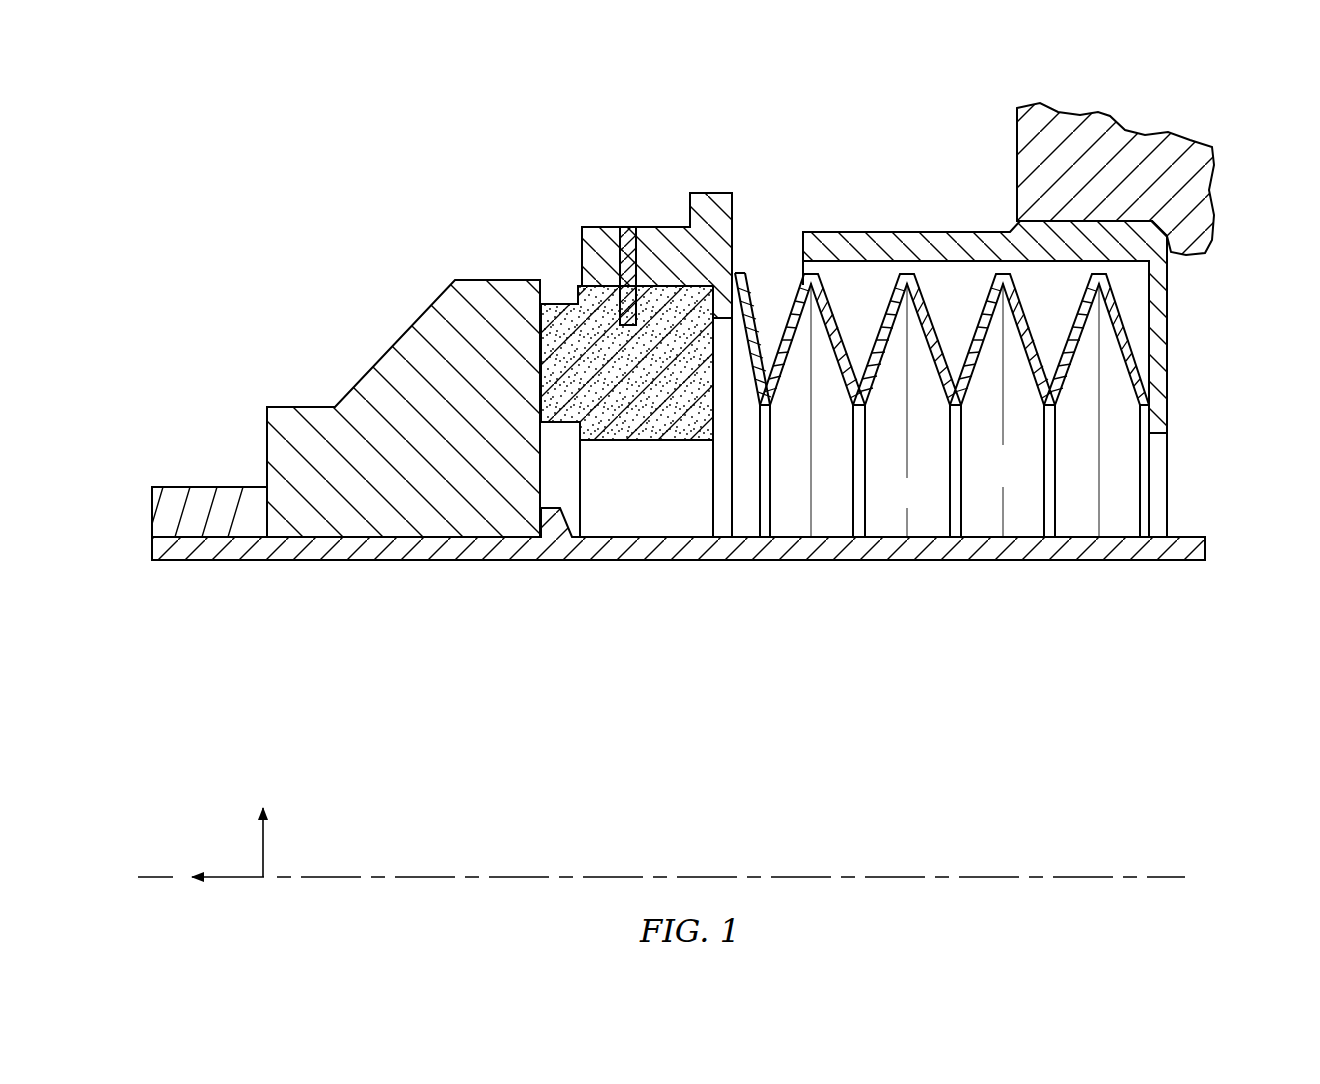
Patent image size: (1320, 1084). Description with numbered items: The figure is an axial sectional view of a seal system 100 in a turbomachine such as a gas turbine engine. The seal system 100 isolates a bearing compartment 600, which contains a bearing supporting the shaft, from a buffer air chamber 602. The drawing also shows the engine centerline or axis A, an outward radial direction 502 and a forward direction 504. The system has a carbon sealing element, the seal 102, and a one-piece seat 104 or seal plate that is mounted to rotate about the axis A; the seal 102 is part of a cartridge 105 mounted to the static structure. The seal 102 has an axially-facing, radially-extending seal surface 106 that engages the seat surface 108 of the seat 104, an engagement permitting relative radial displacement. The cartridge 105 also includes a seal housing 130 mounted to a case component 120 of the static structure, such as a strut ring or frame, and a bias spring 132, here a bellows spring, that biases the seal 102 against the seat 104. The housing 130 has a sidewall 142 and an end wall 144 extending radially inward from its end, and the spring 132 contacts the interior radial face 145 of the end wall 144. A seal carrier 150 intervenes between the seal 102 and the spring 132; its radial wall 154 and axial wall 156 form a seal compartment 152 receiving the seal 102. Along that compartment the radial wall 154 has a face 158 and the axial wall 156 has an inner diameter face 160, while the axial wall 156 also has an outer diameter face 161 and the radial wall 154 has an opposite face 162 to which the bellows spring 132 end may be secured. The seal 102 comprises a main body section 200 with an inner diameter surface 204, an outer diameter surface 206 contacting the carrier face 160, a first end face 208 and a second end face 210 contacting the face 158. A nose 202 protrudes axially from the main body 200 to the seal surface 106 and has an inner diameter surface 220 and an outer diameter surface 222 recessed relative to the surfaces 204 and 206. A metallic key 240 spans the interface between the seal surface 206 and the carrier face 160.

The seal system 100 is at (543, 152).
The sealing element (seal) 102 is at (618, 453).
The seat (seal plate) 104 is at (343, 360).
The cartridge subassembly (cartridge) 105 is at (737, 140).
The seal surface (face) 106 is at (540, 358).
The seat surface (face) 108 is at (577, 445).
The case component 120 is at (1127, 161).
The seal housing (seal support) 130 is at (833, 220).
The bias spring 132 is at (875, 418).
The sidewall 142 is at (922, 248).
The end wall 144 is at (1168, 362).
The interior radial face 145 is at (1137, 312).
The seal carrier (carbon carrier) 150 is at (605, 213).
The seal compartment 152 is at (682, 295).
The radial wall 154 is at (745, 290).
The axial wall 156 is at (600, 277).
The face 158 is at (712, 305).
The face (ID face) 160 is at (602, 290).
The OD face 161 is at (667, 225).
The face 162 is at (735, 235).
The main body section 200 is at (715, 462).
The nose 202 is at (540, 405).
The ID surface 204 is at (643, 443).
The OD surface 206 is at (595, 285).
The first end face 208 is at (578, 290).
The second end face 210 is at (713, 357).
The ID surface 220 is at (560, 427).
The OD surface 222 is at (573, 300).
The key 240 is at (630, 217).
The outward radial direction 502 is at (263, 844).
The forward direction 504 is at (238, 877).
The bearing compartment 600 is at (181, 336).
The buffer air chamber 602 is at (985, 474).
The axis A is at (1167, 860).